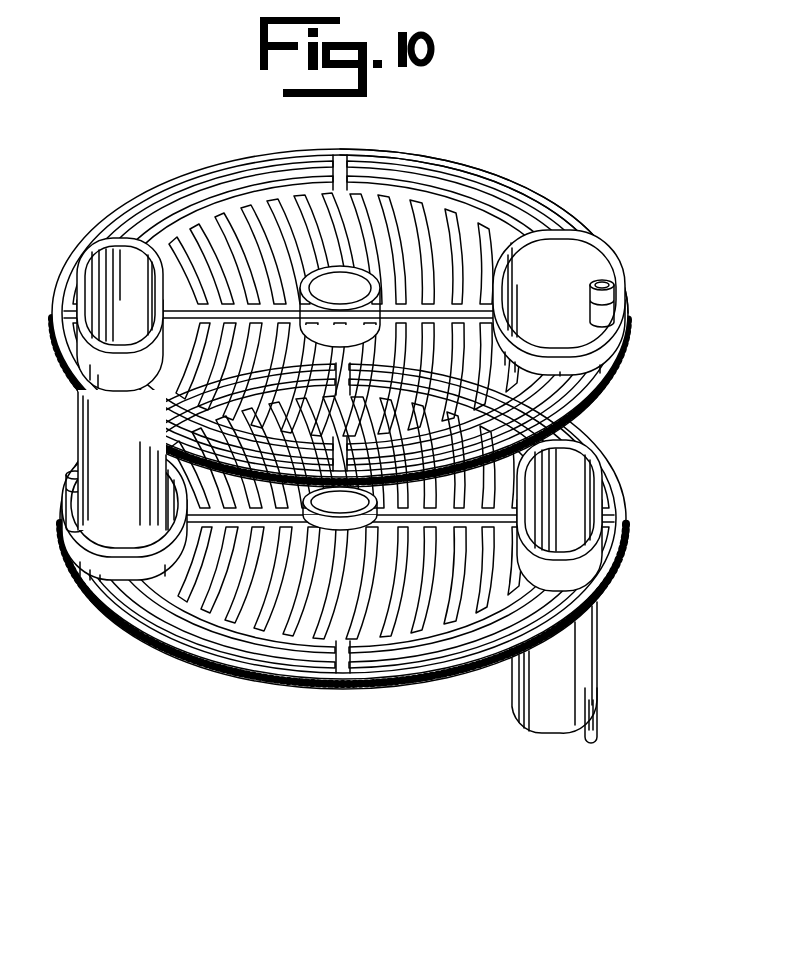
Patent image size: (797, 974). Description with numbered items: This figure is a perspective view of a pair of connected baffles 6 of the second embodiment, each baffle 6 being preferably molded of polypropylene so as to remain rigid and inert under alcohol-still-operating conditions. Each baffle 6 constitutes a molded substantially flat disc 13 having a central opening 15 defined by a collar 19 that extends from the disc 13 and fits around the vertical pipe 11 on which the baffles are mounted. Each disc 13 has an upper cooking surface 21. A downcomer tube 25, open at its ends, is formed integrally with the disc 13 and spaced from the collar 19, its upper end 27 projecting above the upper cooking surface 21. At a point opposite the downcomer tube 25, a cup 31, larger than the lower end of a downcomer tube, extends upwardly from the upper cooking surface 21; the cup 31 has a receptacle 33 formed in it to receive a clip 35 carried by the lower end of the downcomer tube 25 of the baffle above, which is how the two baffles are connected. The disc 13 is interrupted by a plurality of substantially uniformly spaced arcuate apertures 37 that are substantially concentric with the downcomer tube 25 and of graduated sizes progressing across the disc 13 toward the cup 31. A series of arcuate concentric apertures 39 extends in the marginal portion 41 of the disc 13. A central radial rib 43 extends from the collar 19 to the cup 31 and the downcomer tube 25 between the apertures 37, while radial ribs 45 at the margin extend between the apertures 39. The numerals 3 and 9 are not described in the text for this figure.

The tray support rim 3 is at (52, 360).
The baffle 6 is at (488, 128).
The receiving cup 9 is at (90, 535).
The pipe 11 is at (8, 152).
The disc 13 is at (228, 162).
The central opening 15 is at (364, 297).
The collar 19 is at (227, 524).
The upper cooking surface 21 is at (162, 178).
The downcomer tube 25 is at (140, 482).
The upper end of downcomer 27 is at (66, 274).
The cup 31 is at (545, 280).
The receptacle 33 is at (66, 498).
The clip 35 is at (590, 700).
The arcuate apertures 37 is at (388, 213).
The arcuate concentric apertures 39 is at (405, 145).
The marginal portion 41 is at (558, 196).
The central radial rib 43 is at (237, 303).
The radial ribs 45 is at (347, 156).